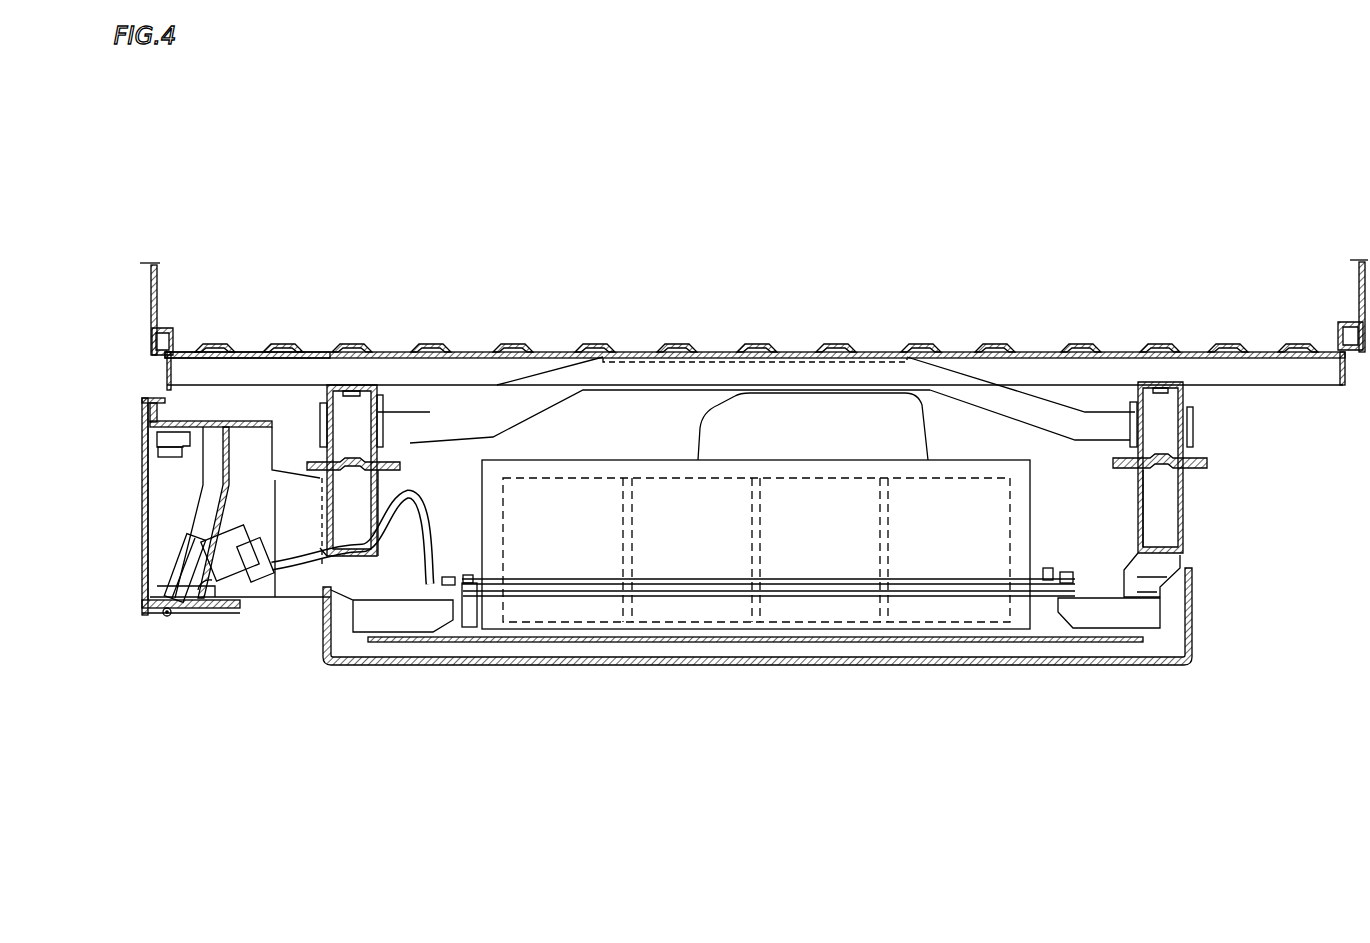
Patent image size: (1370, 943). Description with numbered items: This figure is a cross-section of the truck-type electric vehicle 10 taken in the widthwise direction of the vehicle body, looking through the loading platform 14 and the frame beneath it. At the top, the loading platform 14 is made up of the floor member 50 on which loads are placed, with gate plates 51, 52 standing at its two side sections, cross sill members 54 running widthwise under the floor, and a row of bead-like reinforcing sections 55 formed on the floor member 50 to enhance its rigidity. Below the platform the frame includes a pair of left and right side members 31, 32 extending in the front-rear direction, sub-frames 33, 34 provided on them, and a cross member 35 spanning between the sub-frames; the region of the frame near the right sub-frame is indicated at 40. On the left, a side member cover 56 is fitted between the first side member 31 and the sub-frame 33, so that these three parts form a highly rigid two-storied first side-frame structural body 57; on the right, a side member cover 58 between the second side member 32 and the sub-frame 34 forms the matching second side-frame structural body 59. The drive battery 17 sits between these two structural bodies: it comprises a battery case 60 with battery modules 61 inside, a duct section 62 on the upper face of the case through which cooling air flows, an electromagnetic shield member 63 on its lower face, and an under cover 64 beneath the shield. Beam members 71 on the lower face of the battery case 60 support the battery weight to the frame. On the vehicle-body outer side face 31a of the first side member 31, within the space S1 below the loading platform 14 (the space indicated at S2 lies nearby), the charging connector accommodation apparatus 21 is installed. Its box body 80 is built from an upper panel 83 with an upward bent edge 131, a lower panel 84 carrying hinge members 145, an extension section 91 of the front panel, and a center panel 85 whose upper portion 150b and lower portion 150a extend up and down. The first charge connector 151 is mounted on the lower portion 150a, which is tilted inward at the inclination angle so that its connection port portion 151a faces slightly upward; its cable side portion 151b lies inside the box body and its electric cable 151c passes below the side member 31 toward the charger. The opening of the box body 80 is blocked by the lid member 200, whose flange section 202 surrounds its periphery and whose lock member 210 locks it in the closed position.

The truck-type electric vehicle 10 is at (940, 216).
The loading platform 14 is at (641, 345).
The drive battery 17 is at (718, 568).
The charging connector accommodation apparatus 21 is at (128, 567).
The first side member 31 is at (383, 488).
The vehicle-body outer side face 31a is at (325, 548).
The second side member 32 is at (1185, 555).
The sub-frame 33 is at (340, 385).
The sub-frame 34 is at (1183, 385).
The cross member 35 is at (552, 370).
The frame 40 is at (1095, 398).
The floor member 50 is at (727, 347).
The gate plate 51 is at (157, 283).
The gate plate 52 is at (1348, 298).
The cross sill member 54 is at (246, 360).
The bead-like reinforcing section 55 is at (512, 347).
The side member cover 56 is at (383, 466).
The first side-frame structural body 57 is at (315, 528).
The side member cover 58 is at (1195, 462).
The second side-frame structural body 59 is at (1210, 510).
The battery case 60 is at (567, 462).
The battery module 61 is at (655, 640).
The duct section 62 is at (712, 416).
The electromagnetic shield member 63 is at (770, 642).
The under cover 64 is at (825, 666).
The beam member 71 is at (473, 630).
The box body 80 is at (215, 425).
The upper panel 83 is at (228, 422).
The lower panel 84 is at (206, 615).
The center panel 85 is at (187, 612).
The extension section 91 is at (293, 470).
The bent edge 131 is at (160, 420).
The hinge member 145 is at (165, 616).
The lower portion 150a is at (220, 612).
The upper portion 150b is at (228, 465).
The first charge connector 151 is at (185, 560).
The connection port portion 151a is at (180, 552).
The cable side portion 151b is at (238, 606).
The electric cable 151c is at (432, 568).
The lid member 200 is at (138, 603).
The flange section 202 is at (145, 398).
The lock member 210 is at (163, 453).
The space S1 is at (278, 400).
The space S2 is at (152, 385).